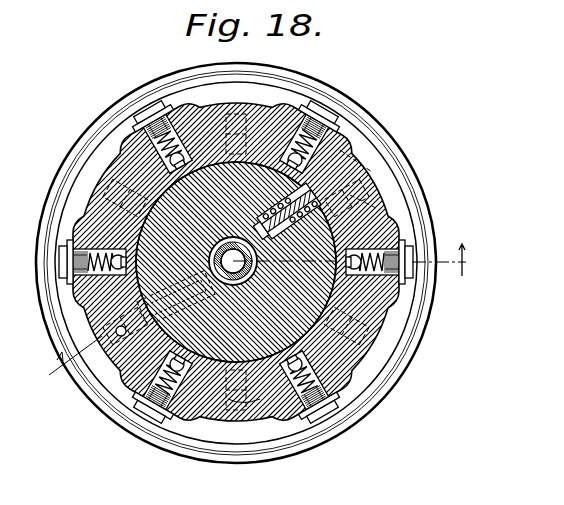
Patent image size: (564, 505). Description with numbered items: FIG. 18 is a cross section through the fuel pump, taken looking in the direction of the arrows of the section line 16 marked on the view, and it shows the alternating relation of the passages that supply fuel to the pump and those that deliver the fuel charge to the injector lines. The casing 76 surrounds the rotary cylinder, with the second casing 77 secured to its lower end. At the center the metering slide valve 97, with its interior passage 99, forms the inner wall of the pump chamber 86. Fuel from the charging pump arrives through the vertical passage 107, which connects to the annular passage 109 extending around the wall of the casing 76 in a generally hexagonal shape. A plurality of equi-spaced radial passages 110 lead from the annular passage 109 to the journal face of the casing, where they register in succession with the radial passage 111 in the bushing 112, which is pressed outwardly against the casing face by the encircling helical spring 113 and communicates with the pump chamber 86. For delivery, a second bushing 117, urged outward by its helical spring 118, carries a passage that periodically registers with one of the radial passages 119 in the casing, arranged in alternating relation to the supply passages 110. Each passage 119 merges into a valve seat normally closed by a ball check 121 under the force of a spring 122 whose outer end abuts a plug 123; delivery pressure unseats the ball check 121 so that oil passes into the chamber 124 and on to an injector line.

The section line reference 16 is at (263, 312).
The casing 76 is at (118, 163).
The second casing 77 is at (124, 97).
The pump chamber 86 is at (232, 250).
The metering slide valve 97 is at (212, 240).
The interior passage 99 is at (229, 246).
The vertical passage 107 is at (118, 336).
The annular passage 109 is at (352, 168).
The radial passages 110 is at (245, 423).
The radial passage 111 is at (176, 288).
The bushing 112 is at (125, 302).
The helical spring 113 is at (209, 300).
The bushing 117 is at (343, 160).
The helical spring 118 is at (365, 197).
The radial passages 119 is at (372, 216).
The ball check 121 is at (358, 278).
The spring 122 is at (375, 272).
The plug 123 is at (404, 270).
The chamber 124 is at (312, 148).